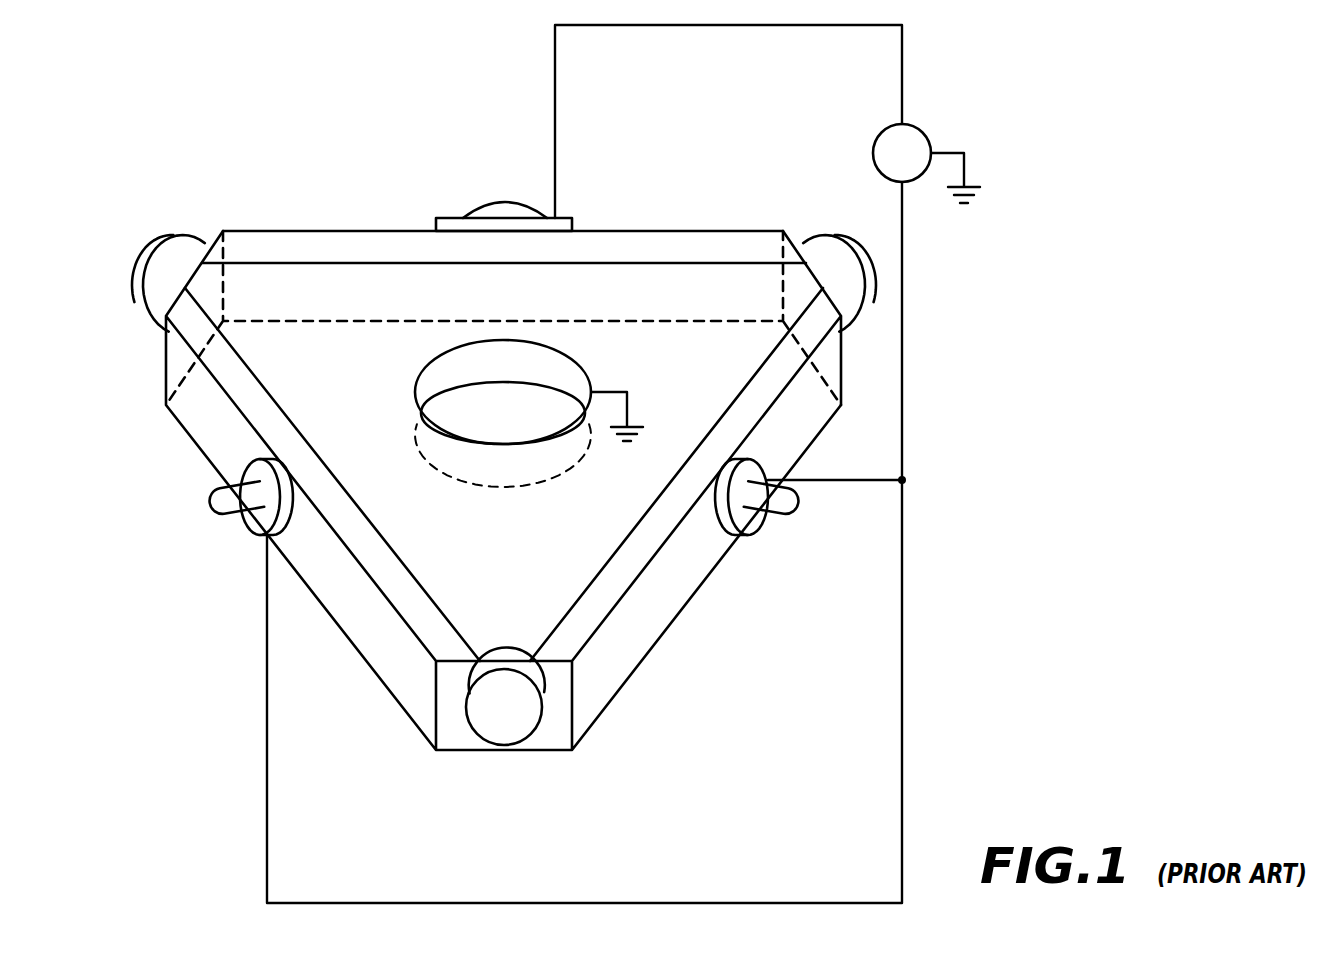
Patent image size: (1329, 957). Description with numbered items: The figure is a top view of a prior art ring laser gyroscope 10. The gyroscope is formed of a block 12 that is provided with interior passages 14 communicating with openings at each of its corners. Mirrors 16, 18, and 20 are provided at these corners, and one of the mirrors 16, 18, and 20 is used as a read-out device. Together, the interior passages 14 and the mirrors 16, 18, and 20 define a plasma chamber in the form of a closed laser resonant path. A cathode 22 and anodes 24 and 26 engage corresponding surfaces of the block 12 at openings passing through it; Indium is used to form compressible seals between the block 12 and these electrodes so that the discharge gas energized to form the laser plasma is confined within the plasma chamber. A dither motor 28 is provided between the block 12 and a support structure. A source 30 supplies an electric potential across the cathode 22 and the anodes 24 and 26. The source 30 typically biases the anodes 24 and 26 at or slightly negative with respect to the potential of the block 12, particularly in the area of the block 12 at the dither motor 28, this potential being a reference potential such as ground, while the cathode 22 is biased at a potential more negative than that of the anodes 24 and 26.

The ring laser gyroscope 10 is at (700, 140).
The block 12 is at (624, 660).
The interior passages 14 is at (330, 265).
The mirror 16 is at (517, 733).
The mirror 18 is at (822, 240).
The mirror 20 is at (187, 240).
The cathode 22 is at (480, 208).
The anode 24 is at (260, 522).
The anode 26 is at (737, 522).
The dither motor 28 is at (572, 373).
The source 30 is at (888, 138).